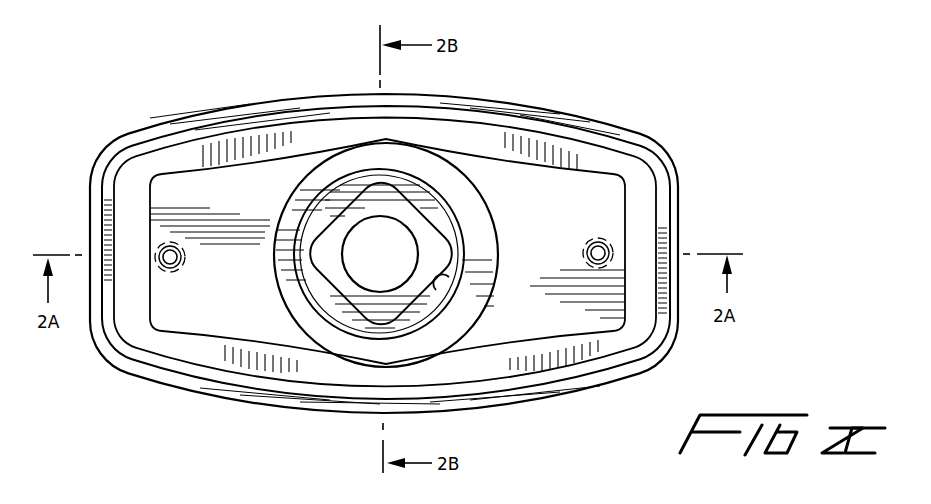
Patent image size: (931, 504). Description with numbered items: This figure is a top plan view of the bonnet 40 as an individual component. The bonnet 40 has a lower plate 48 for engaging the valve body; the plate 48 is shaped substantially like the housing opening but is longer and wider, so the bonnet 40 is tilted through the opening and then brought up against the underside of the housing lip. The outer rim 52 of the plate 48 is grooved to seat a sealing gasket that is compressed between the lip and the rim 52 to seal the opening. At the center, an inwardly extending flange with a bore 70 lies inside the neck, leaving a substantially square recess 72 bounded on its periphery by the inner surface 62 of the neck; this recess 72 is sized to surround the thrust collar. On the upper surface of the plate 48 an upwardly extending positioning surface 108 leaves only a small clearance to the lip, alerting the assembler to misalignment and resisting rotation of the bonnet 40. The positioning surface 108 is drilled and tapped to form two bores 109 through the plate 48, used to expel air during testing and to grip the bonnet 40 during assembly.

The bonnet 40 is at (224, 66).
The lower plate 48 is at (607, 345).
The rim 52 is at (392, 253).
The inner surface 62 is at (440, 284).
The bore 70 is at (396, 266).
The recess 72 is at (330, 230).
The positioning surface 108 is at (527, 175).
The bores 109 is at (385, 218).